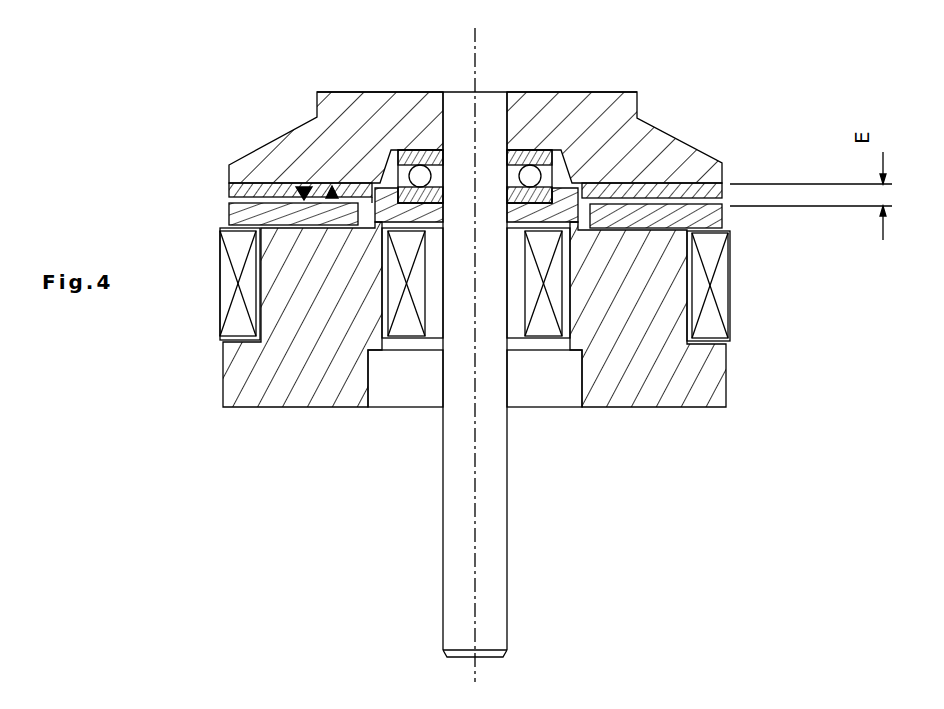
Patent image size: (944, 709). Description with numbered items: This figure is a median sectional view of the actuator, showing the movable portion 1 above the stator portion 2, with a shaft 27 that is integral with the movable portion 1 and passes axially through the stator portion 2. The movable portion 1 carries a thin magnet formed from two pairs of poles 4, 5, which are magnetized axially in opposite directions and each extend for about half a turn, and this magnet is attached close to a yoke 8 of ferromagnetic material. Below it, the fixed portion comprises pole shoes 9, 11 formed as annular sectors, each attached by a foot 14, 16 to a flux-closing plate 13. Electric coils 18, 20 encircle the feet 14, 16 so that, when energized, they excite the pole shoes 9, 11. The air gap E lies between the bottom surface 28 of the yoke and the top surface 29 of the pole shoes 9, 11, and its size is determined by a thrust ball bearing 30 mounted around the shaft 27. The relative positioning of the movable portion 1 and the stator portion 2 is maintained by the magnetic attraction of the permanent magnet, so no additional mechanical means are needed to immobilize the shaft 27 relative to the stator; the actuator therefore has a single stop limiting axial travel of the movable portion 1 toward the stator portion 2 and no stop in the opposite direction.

The movable portion 1 is at (113, 83).
The stator portion 2 is at (843, 232).
The pair of poles 4 is at (276, 188).
The pair of poles 5 is at (690, 192).
The yoke 8 is at (654, 165).
The pole shoe 9 is at (706, 212).
The pole shoe 11 is at (235, 218).
The flux-closing plate 13 is at (310, 393).
The foot 14 is at (650, 343).
The foot 16 is at (308, 310).
The electric coil 18 is at (706, 290).
The electric coil 20 is at (240, 283).
The shaft 27 is at (493, 561).
The bottom surface 28 is at (357, 190).
The top surface 29 is at (308, 188).
The thrust ball bearing 30 is at (410, 168).